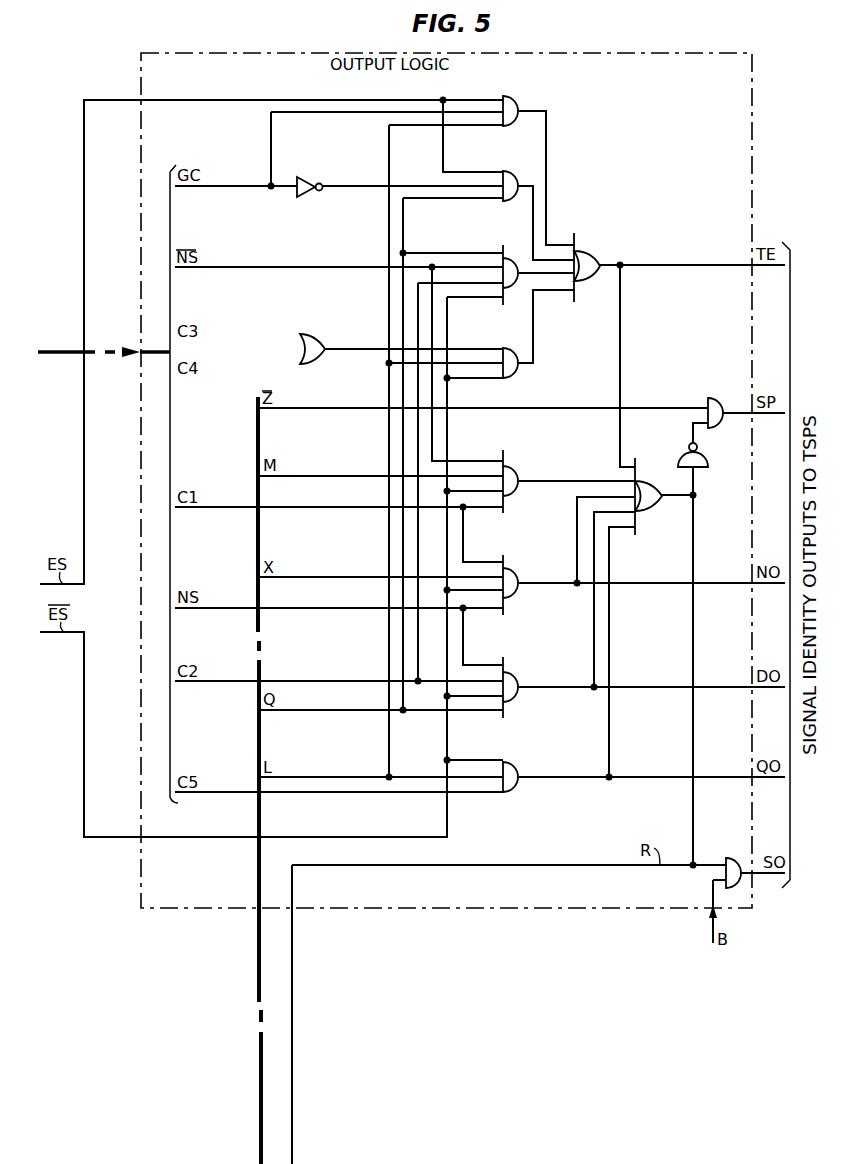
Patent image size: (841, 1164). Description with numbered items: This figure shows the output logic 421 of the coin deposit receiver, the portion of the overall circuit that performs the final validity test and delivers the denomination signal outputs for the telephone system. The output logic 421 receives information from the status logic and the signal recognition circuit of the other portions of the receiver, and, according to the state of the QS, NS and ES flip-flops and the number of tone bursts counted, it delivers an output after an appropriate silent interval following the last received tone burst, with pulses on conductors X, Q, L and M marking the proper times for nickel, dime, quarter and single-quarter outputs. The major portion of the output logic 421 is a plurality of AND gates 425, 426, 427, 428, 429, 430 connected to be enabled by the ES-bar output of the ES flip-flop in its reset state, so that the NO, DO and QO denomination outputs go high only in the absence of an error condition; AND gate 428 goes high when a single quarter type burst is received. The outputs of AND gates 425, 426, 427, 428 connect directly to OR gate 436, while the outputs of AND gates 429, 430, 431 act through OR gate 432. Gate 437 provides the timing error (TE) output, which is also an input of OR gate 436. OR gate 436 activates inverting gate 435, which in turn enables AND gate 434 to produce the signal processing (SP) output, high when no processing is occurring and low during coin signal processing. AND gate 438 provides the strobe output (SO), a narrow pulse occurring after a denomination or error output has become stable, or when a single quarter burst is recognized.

The output logic 421 is at (729, 53).
The AND gate 425 is at (518, 763).
The AND gate 426 is at (517, 676).
The AND gate 427 is at (515, 573).
The AND gate 428 is at (515, 470).
The AND gate 429 is at (517, 371).
The AND gate 430 is at (513, 257).
The AND gate 431 is at (507, 170).
The OR gate 432 is at (515, 100).
The AND gate 434 is at (712, 398).
The inverting gate 435 is at (680, 452).
The OR gate 436 is at (647, 503).
The gate 437 is at (589, 254).
The AND gate 438 is at (729, 858).